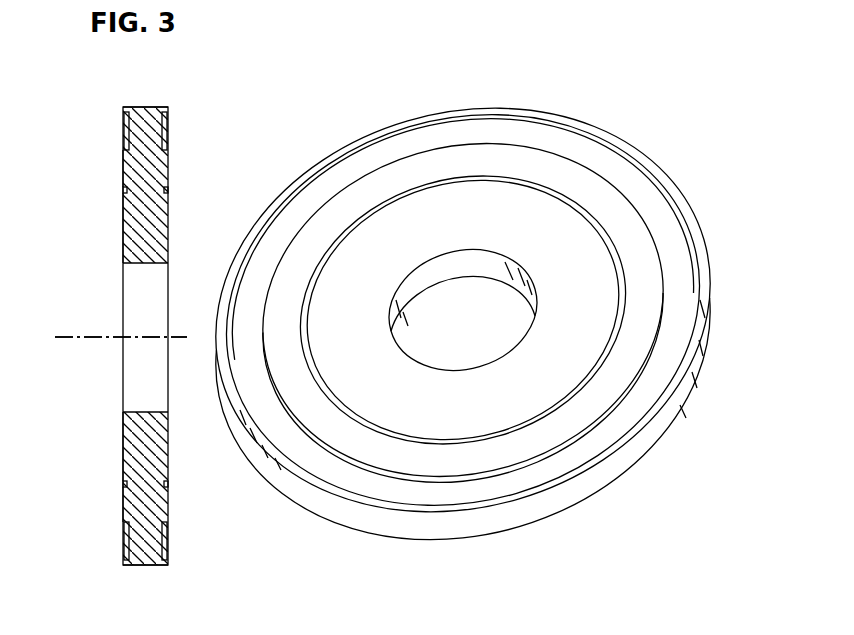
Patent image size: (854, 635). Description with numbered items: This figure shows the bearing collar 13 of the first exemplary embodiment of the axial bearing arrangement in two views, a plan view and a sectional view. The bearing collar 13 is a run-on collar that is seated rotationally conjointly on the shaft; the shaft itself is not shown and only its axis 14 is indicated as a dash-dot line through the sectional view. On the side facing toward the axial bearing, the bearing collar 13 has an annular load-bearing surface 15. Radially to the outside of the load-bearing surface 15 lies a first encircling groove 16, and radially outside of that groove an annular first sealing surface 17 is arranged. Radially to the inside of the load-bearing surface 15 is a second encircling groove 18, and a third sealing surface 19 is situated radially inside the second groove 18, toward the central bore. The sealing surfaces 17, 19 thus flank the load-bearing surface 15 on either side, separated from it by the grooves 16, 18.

The bearing collar 13 is at (412, 321).
The axis 14 is at (76, 339).
The load-bearing surface 15 is at (122, 158).
The first encircling groove 16 is at (127, 127).
The first sealing surface 17 is at (121, 110).
The second encircling groove 18 is at (127, 190).
The third sealing surface 19 is at (122, 223).